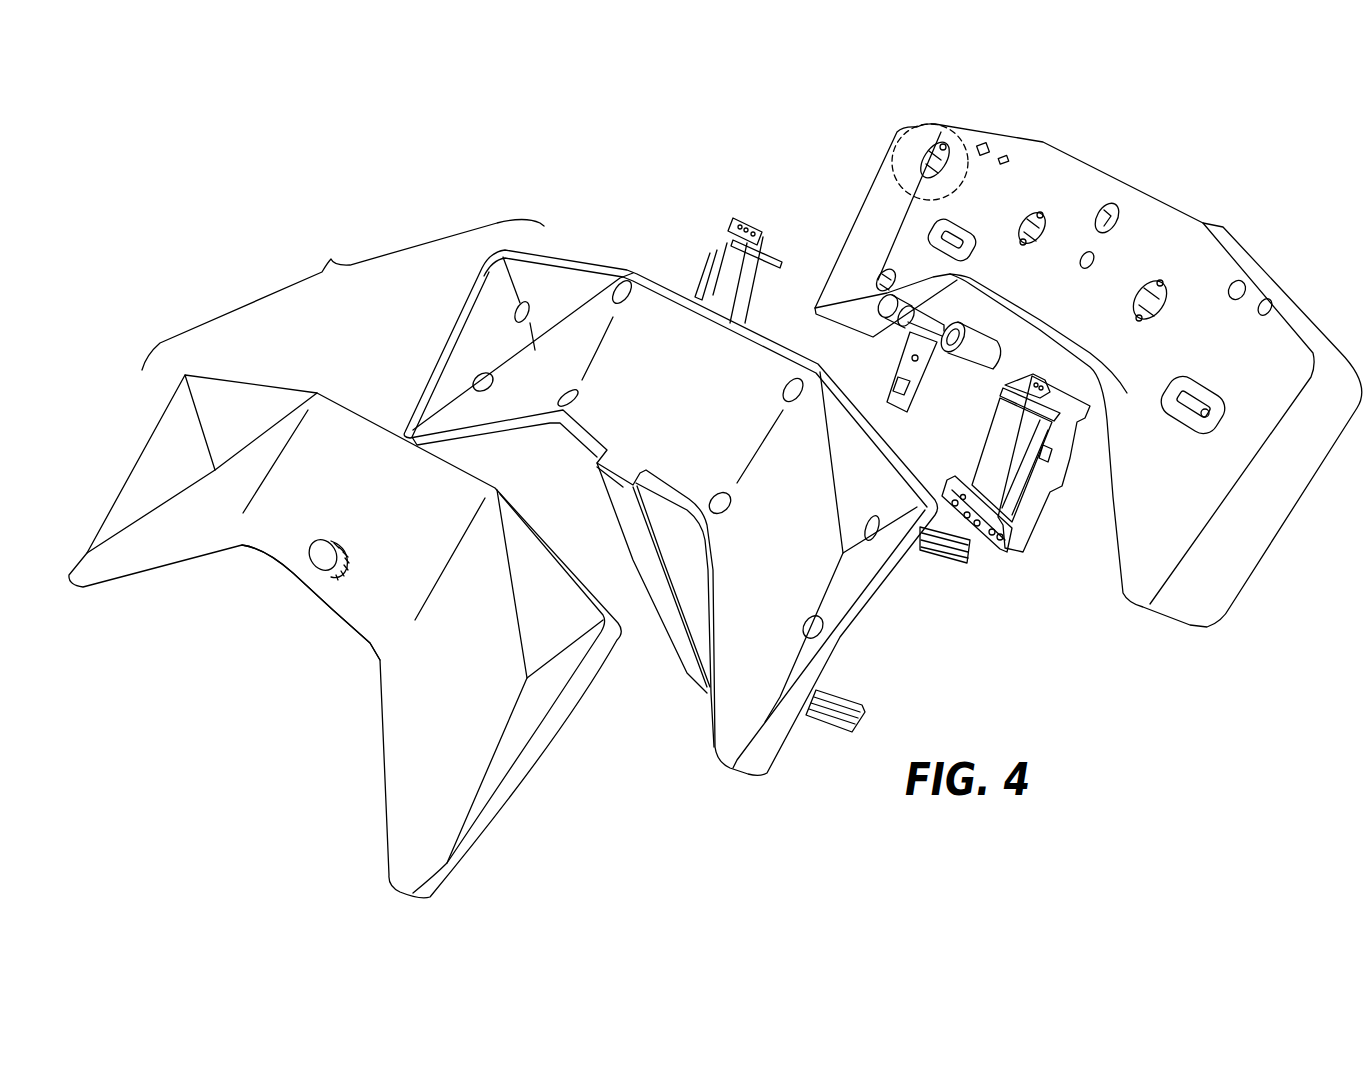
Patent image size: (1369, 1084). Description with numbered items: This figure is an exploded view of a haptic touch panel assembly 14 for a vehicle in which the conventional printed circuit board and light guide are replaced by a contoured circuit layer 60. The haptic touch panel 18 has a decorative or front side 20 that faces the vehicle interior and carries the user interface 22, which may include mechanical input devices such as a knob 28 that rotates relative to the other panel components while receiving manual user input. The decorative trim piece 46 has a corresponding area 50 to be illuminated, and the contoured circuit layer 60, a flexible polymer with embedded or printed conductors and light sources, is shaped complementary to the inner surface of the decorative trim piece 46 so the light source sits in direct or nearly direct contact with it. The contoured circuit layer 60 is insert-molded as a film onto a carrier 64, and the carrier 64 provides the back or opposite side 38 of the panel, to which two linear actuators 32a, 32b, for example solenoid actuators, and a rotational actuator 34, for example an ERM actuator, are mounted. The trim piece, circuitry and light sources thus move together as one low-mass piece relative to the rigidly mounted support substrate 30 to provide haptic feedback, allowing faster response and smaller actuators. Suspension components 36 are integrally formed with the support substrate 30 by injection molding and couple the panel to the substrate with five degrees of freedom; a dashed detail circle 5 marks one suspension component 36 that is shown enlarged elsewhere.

The detail view circle 5 is at (900, 135).
The haptic touch panel assembly 14 is at (303, 158).
The haptic touch panel 18 is at (343, 295).
The decorative or front side 20 is at (420, 688).
The user interface 22 is at (260, 530).
The knob 28 is at (323, 560).
The support substrate 30 is at (1133, 207).
The linear actuator 32a is at (1010, 447).
The linear actuator 32b is at (737, 263).
The rotational actuator 34 is at (980, 333).
The suspension component 36 is at (932, 155).
The back or opposite side 38 is at (970, 560).
The decorative trim piece 46 is at (143, 412).
The area to be illuminated 50 is at (317, 517).
The contoured circuit layer 60 is at (662, 317).
The carrier 64 is at (842, 650).